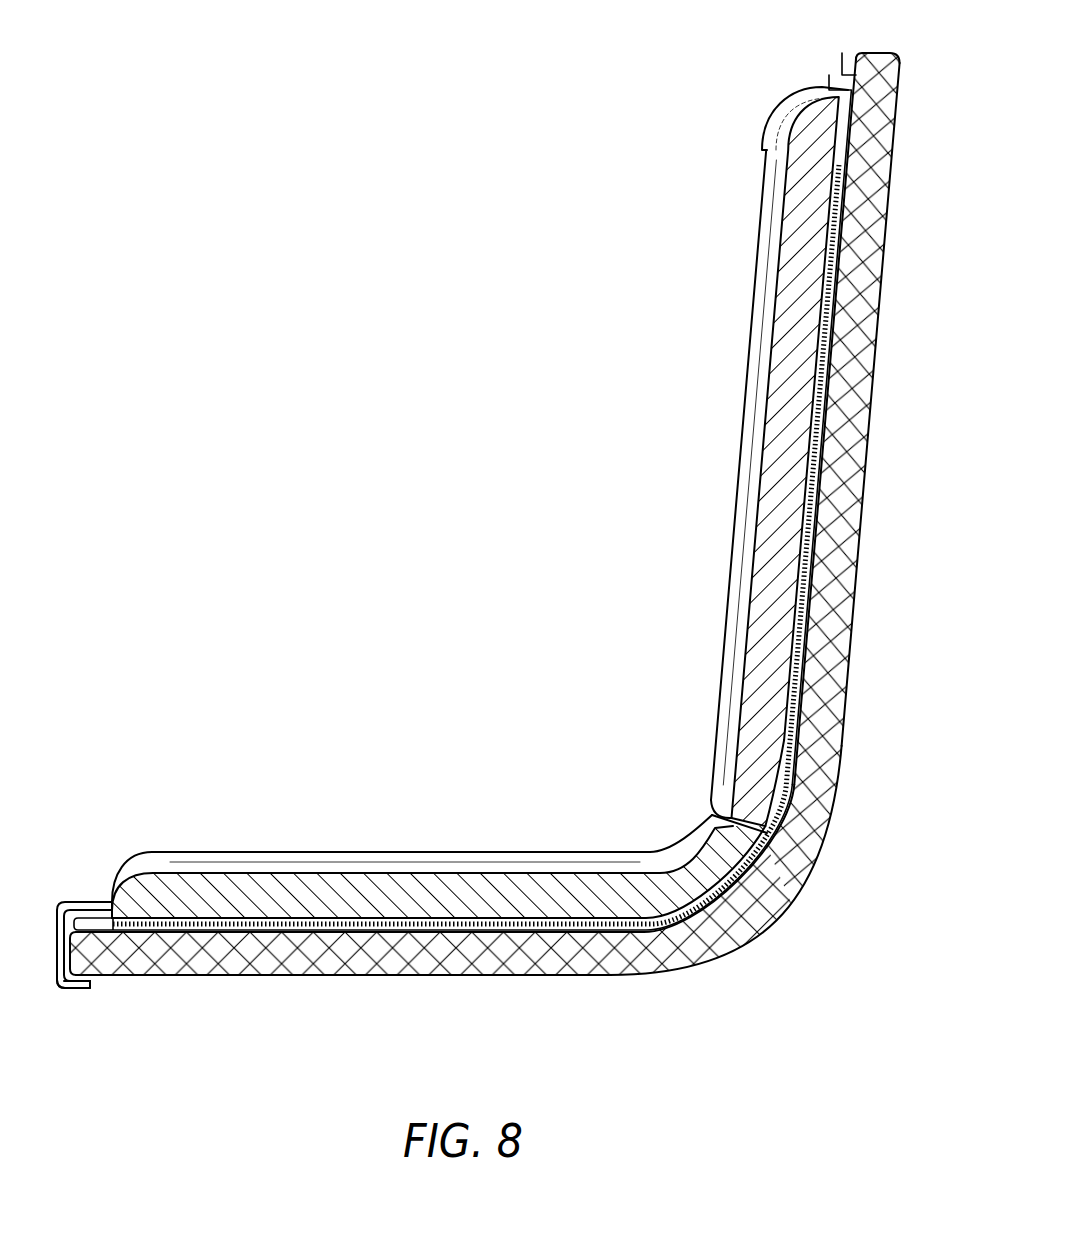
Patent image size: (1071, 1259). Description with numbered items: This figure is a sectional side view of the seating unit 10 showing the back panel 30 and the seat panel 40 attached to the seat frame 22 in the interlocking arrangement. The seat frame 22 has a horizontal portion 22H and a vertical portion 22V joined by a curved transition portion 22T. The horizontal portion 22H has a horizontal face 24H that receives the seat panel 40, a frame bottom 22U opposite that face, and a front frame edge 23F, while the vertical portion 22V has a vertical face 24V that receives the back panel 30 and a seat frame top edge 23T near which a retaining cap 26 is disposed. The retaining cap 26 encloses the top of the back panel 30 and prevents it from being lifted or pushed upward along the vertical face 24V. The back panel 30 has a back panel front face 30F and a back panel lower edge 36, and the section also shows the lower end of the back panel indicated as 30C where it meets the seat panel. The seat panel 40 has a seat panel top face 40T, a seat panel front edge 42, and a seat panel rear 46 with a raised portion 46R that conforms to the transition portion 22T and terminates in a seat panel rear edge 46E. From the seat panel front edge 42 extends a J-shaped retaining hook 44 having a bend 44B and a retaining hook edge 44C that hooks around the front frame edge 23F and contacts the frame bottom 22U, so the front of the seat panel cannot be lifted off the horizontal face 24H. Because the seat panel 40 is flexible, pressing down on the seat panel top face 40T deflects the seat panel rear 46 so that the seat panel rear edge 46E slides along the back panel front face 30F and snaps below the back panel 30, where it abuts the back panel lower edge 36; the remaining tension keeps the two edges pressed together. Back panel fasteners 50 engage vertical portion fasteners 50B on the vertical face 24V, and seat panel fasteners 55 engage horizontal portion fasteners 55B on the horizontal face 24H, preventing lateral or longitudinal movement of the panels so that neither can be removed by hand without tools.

The seating unit 10 is at (733, 1038).
The seat frame 22 is at (771, 922).
The horizontal portion 22H is at (420, 955).
The vertical portion 22V is at (882, 368).
The transition portion 22T is at (792, 838).
The frame bottom 22U is at (100, 978).
The seat frame top edge 23T is at (876, 53).
The front frame edge 23F is at (68, 948).
The horizontal face 24H is at (330, 930).
The vertical face 24V is at (858, 147).
The retaining cap 26 is at (792, 102).
The back panel 30 is at (800, 207).
The back panel front face 30F is at (748, 358).
The lower corner of vertical panel 30C is at (710, 808).
The back panel lower edge 36 is at (514, 553).
The seat panel 40 is at (200, 888).
The seat panel top face 40T is at (276, 852).
The seat panel front edge 42 is at (112, 905).
The retaining hook 44 is at (57, 948).
The bend 44B is at (85, 982).
The retaining hook edge 44C is at (92, 980).
The seat panel rear 46 is at (731, 858).
The raised portion 46R is at (710, 816).
The seat panel rear edge 46E is at (781, 880).
The back panel fasteners 50 is at (776, 706).
The vertical portion fasteners 50B is at (815, 520).
The seat panel fasteners 55 is at (372, 922).
The horizontal portion fasteners 55B is at (510, 935).